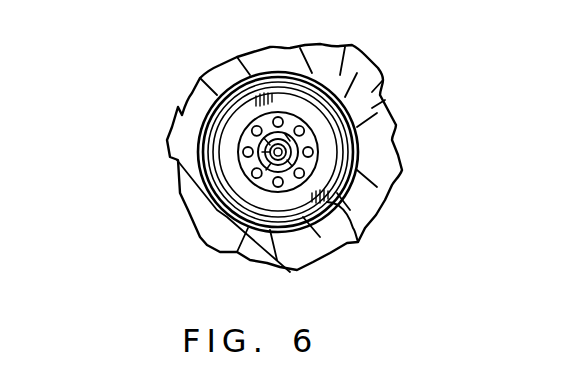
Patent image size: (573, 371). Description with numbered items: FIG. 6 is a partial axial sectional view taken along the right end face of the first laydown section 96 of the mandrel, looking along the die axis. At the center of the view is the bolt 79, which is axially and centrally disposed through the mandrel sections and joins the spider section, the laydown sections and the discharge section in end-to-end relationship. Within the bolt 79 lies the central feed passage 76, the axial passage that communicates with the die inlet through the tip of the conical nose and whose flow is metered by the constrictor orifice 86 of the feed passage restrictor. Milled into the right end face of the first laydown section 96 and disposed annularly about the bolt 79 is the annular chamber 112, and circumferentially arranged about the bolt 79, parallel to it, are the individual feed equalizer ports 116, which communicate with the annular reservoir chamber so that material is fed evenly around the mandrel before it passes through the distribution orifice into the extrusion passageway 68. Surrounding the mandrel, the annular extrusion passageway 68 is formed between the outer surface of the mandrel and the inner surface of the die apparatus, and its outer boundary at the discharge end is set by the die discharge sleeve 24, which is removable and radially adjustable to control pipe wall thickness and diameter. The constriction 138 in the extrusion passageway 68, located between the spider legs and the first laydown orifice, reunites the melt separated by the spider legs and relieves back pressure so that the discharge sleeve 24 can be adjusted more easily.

The die discharge sleeve 24 is at (198, 103).
The annular extrusion passageway 68 is at (225, 208).
The central feed passage 76 is at (283, 130).
The bolt 79 is at (250, 148).
The constrictor orifice 86 is at (262, 156).
The first laydown section 96 is at (383, 80).
The annular chamber 112 is at (312, 147).
The feed equalizer ports 116 is at (340, 172).
The constriction 138 is at (358, 242).